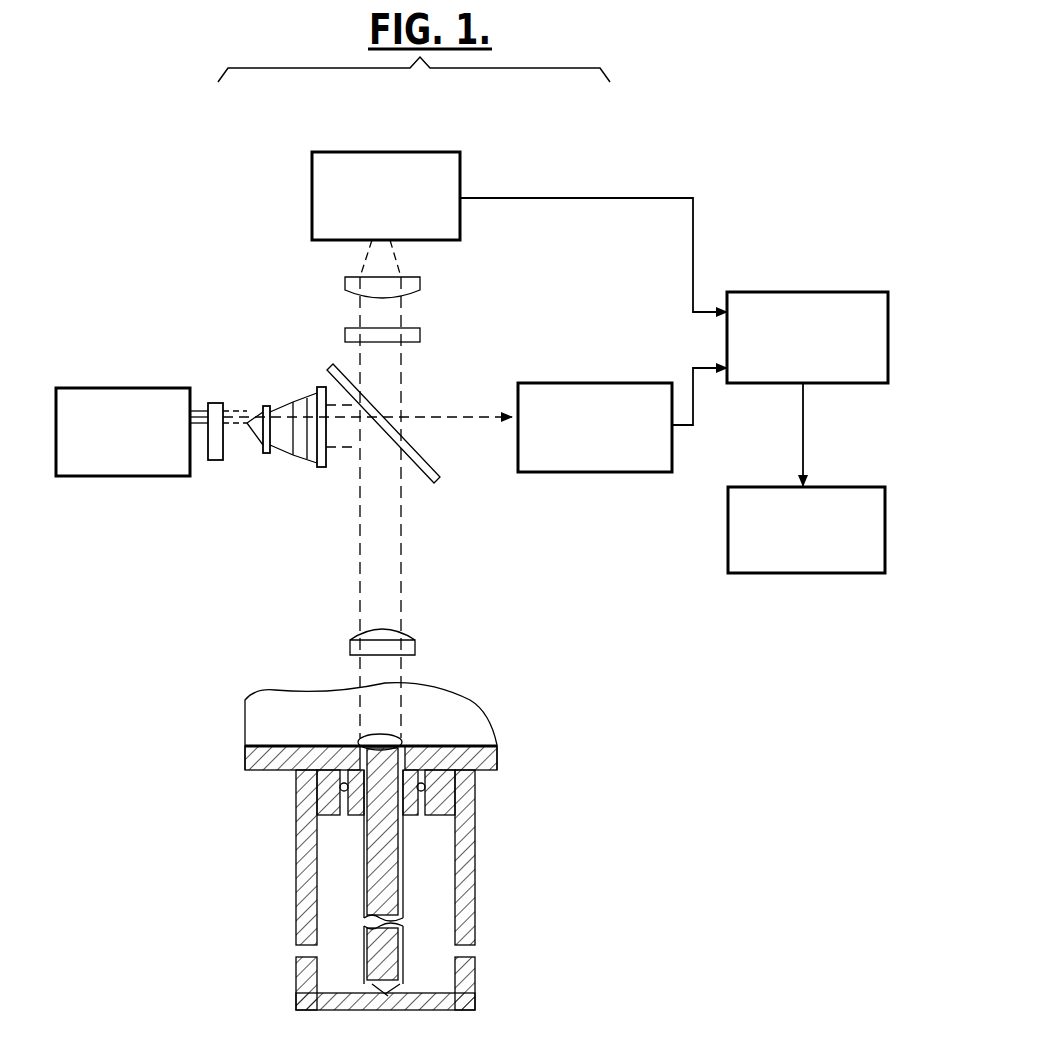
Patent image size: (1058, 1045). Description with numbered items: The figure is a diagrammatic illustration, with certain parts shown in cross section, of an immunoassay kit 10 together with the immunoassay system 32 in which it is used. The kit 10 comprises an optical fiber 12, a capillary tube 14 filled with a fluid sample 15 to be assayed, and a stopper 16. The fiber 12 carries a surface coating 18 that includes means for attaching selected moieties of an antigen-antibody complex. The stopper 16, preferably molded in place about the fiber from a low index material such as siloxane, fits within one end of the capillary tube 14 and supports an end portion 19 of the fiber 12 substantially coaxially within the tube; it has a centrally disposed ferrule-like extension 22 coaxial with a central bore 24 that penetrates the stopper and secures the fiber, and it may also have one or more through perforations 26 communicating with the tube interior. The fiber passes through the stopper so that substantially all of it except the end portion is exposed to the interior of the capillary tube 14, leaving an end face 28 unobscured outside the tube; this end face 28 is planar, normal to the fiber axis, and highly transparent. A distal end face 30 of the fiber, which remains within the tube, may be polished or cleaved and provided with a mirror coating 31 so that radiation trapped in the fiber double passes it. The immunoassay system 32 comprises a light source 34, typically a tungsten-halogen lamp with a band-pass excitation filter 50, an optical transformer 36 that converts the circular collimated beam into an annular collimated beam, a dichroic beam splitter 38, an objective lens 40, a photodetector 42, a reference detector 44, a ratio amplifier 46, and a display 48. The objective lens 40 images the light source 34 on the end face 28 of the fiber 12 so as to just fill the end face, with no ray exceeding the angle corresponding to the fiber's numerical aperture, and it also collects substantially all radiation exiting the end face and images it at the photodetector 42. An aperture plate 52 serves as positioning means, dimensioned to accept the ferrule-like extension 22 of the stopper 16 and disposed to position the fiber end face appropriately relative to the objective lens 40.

The immunoassay kit 10 is at (550, 847).
The optical fiber 12 is at (383, 873).
The capillary tube 14 is at (462, 835).
The fluid sample 15 is at (337, 867).
The stopper 16 is at (323, 803).
The surface coating 18 is at (405, 897).
The end portion 19 is at (405, 745).
The ferrule-like extension 22 is at (355, 762).
The central bore 24 is at (397, 743).
The through perforations 26 is at (296, 780).
The end face 28 is at (367, 733).
The end face 30 is at (338, 1008).
The mirror coating 31 is at (413, 1012).
The immunoassay system 32 is at (160, 228).
The light source 34 is at (118, 388).
The optical transformer 36 is at (327, 482).
The dichroic beam splitter 38 is at (378, 413).
The objective lens 40 is at (415, 641).
The photodetector 42 is at (438, 150).
The reference detector 44 is at (588, 383).
The ratio amplifier 46 is at (790, 292).
The display 48 is at (760, 574).
The excitation filter 50 is at (216, 403).
The aperture plate 52 is at (473, 727).